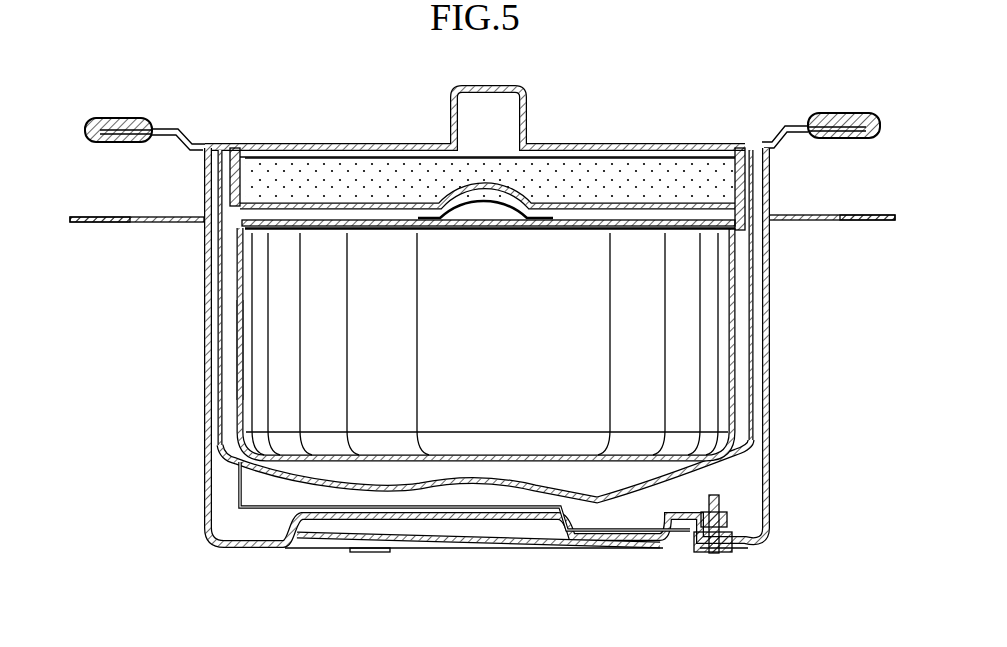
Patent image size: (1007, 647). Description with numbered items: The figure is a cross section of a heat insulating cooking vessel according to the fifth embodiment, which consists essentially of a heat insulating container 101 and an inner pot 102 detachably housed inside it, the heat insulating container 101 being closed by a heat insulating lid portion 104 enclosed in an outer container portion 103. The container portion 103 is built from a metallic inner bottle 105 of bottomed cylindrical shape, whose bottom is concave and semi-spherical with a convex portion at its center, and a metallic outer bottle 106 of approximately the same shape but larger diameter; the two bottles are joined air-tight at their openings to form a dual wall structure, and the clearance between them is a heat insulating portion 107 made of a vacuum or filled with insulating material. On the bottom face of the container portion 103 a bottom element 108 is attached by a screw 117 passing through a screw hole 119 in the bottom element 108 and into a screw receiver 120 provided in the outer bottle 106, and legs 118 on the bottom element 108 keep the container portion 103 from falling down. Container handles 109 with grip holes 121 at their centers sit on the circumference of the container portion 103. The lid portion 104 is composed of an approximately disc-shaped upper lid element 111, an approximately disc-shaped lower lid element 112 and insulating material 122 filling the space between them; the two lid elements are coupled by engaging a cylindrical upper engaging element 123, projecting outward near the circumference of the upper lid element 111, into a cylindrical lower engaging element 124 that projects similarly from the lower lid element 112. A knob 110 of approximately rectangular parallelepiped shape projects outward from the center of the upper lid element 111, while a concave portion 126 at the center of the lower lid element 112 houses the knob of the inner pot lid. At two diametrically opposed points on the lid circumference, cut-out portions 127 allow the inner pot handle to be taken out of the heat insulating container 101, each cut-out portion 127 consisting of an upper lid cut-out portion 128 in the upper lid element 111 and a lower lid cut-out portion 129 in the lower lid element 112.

The heat insulating container 101 is at (772, 328).
The inner pot 102 is at (734, 303).
The container portion 103 is at (790, 180).
The lid portion 104 is at (603, 141).
The inner bottle 105 is at (215, 362).
The outer bottle 106 is at (202, 340).
The heat insulating portion 107 is at (215, 388).
The bottom element 108 is at (772, 430).
The container handle 109 is at (80, 226).
The knob 110 is at (483, 113).
The upper lid element 111 is at (418, 142).
The lower lid element 112 is at (365, 193).
The screw 117 is at (716, 552).
The leg 118 is at (220, 530).
The screw hole 119 is at (730, 523).
The screw receiver 120 is at (730, 490).
The grip hole 121 is at (130, 217).
The insulating material 122 is at (668, 157).
The upper engaging element 123 is at (258, 163).
The lower engaging element 124 is at (245, 190).
The concave portion 126 is at (498, 188).
The cut-out portion 127 is at (229, 148).
The upper lid cut-out portion 128 is at (203, 153).
The lower lid cut-out portion 129 is at (240, 184).